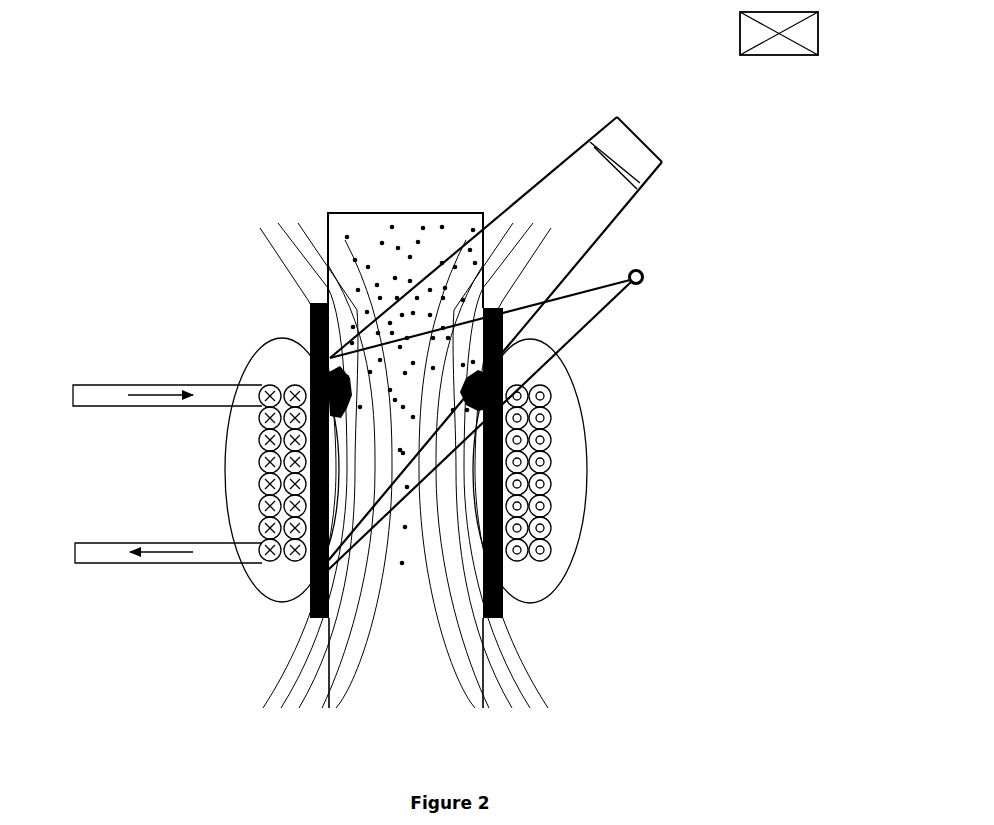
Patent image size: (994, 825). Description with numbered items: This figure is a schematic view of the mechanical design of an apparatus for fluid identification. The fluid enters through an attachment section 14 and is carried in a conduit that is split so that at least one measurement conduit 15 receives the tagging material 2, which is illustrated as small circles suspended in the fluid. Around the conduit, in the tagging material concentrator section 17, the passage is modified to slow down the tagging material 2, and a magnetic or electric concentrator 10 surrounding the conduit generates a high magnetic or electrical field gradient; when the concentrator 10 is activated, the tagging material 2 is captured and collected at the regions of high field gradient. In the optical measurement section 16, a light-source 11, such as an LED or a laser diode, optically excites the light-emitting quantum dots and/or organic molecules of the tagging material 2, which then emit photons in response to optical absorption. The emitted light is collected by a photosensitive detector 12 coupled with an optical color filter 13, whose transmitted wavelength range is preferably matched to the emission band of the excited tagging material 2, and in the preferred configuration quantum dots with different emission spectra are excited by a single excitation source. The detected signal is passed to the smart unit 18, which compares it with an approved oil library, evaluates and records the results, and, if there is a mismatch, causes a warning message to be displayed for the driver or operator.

The tagging material 2 is at (332, 395).
The magnetic or electric concentrator 10 is at (552, 572).
The light-source 11 is at (653, 275).
The detector 12 is at (643, 122).
The optical color filter 13 is at (640, 188).
The attachment section 14 is at (308, 317).
The measurement conduit 15 is at (367, 238).
The optical measurement section 16 is at (677, 57).
The tagging material concentrator section 17 is at (58, 535).
The smart unit 18 is at (810, 63).